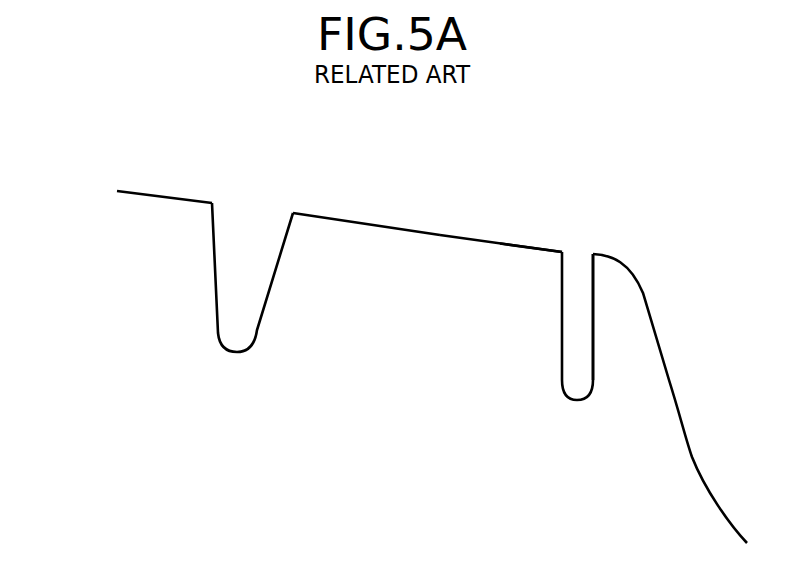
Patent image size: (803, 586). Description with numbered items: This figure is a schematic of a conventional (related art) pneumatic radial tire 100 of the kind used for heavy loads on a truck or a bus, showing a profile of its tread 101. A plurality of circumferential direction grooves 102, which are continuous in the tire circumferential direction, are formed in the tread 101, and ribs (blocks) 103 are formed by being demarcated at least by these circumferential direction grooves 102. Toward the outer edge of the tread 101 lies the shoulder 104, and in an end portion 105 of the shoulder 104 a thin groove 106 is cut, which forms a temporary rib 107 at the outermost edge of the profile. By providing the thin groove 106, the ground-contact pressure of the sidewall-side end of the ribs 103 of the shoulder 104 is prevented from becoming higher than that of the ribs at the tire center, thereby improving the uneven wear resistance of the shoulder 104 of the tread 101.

The pneumatic radial tire 100 is at (62, 128).
The tread 101 is at (322, 205).
The circumferential direction groove 102 is at (246, 247).
The rib 103 is at (152, 212).
The shoulder 104 is at (515, 222).
The end portion 105 is at (561, 246).
The thin groove 106 is at (574, 280).
The temporary rib 107 is at (620, 300).